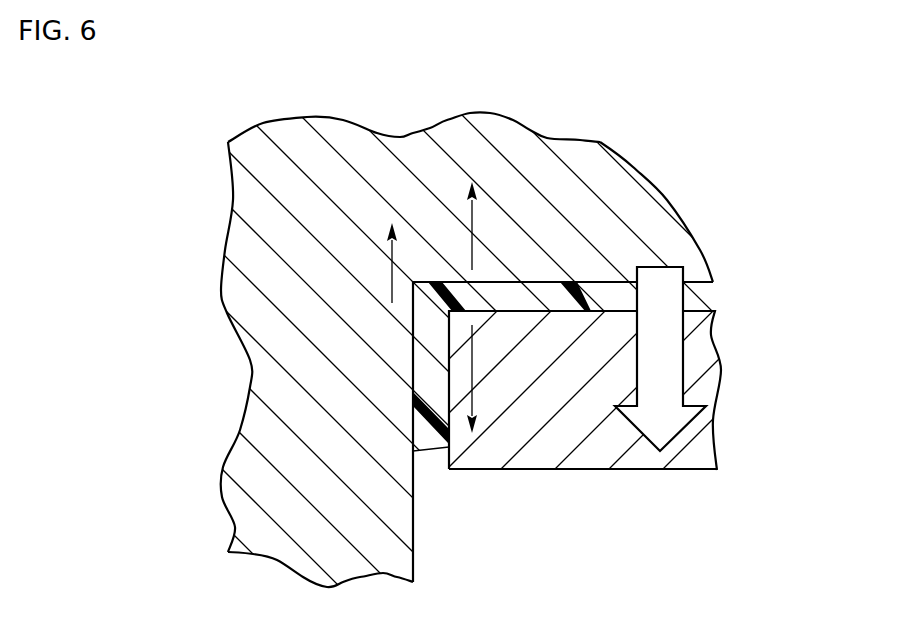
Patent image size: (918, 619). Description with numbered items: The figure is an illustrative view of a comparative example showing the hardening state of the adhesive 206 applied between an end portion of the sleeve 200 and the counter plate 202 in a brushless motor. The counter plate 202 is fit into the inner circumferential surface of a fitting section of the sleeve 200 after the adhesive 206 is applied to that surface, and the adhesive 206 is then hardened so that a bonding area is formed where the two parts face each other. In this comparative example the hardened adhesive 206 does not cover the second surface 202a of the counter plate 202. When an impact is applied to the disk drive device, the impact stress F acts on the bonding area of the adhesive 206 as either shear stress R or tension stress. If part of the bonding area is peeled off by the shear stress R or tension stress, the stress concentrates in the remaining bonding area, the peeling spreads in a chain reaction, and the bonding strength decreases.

The sleeve 200 is at (620, 202).
The counter plate 202 is at (603, 443).
The second surface of the counter plate 202a is at (697, 470).
The adhesive 206 is at (428, 440).
The impact stress F is at (687, 350).
The shear stress R is at (393, 253).